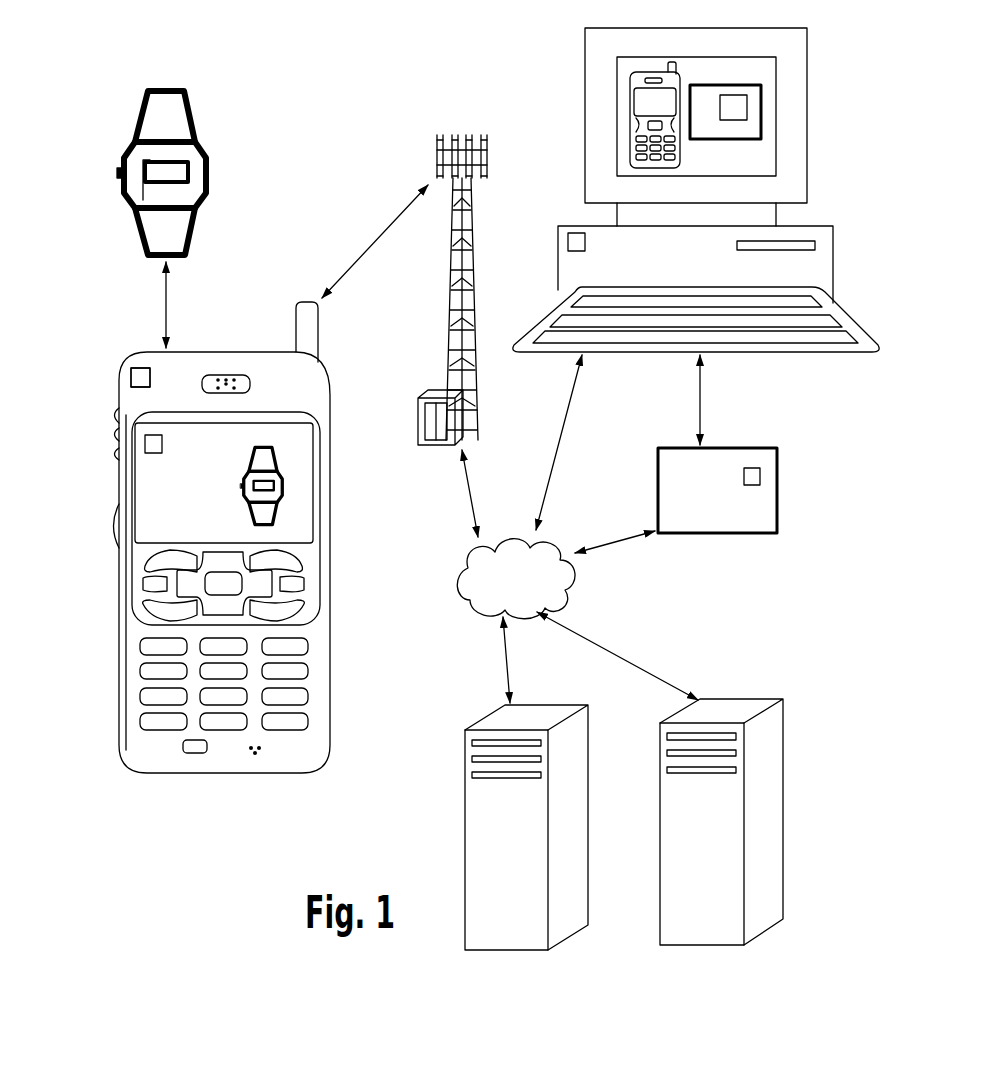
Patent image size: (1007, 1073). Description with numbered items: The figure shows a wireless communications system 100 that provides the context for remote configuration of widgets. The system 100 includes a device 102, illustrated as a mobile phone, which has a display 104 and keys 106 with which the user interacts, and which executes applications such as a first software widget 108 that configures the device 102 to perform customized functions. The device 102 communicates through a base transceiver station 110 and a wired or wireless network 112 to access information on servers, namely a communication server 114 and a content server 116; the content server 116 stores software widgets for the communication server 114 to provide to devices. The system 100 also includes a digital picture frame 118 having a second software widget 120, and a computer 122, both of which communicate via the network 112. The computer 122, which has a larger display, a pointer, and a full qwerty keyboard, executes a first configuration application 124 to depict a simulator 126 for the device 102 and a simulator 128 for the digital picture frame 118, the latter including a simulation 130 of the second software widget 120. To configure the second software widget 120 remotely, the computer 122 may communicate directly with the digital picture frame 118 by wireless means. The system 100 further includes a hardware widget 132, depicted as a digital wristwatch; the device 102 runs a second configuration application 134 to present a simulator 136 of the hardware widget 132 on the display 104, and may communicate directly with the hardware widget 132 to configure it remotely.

The wireless communications system 100 is at (425, 58).
The device 102 is at (150, 776).
The display 104 is at (310, 437).
The keys 106 is at (112, 558).
The first software widget 108 is at (146, 433).
The base transceiver station 110 is at (404, 290).
The network 112 is at (468, 596).
The communication server 114 is at (468, 798).
The content server 116 is at (668, 779).
The digital picture frame 118 is at (662, 466).
The second software widget 120 is at (763, 476).
The computer 122 is at (558, 297).
The first configuration application 124 is at (560, 233).
The simulator 126 is at (640, 110).
The simulator 128 is at (745, 128).
The simulation 130 is at (740, 100).
The hardware widget 132 is at (198, 212).
The second configuration application 134 is at (131, 371).
The simulator 136 is at (275, 511).